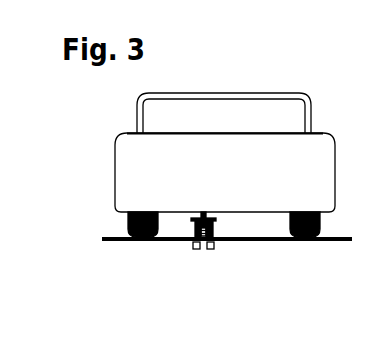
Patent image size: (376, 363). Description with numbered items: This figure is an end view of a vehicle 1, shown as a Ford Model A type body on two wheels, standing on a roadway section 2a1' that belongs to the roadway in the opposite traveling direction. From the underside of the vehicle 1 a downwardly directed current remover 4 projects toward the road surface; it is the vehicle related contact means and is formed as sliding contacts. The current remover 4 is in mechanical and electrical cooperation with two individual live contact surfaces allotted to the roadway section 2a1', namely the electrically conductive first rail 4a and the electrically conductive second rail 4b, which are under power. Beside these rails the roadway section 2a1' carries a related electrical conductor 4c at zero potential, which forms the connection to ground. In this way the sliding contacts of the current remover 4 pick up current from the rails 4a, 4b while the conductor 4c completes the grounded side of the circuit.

The vehicle 1 is at (133, 155).
The current remover 4 is at (170, 234).
The first rail 4a is at (209, 250).
The second rail 4b is at (196, 249).
The roadway section related electrical conductor 4c is at (193, 225).
The roadway section 2a1' is at (227, 257).